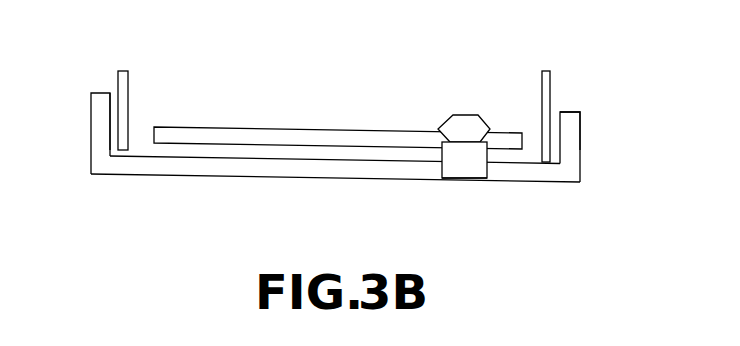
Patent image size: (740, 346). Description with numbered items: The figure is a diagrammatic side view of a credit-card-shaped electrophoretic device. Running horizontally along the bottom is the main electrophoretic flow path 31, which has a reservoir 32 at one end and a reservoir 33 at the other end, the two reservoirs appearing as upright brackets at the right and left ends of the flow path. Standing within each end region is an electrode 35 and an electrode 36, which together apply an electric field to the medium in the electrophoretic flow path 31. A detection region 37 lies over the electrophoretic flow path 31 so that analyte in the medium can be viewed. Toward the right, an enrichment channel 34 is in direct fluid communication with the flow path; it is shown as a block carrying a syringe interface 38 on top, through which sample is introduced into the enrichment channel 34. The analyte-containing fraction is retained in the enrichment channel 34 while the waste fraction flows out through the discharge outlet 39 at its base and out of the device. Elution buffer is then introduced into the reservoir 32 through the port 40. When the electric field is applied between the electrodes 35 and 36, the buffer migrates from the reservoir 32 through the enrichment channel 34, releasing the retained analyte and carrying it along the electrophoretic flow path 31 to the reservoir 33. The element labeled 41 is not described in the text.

The main electrophoretic flow path 31 is at (297, 166).
The reservoir 32 is at (535, 158).
The reservoir 33 is at (140, 150).
The enrichment channel 34 is at (462, 160).
The electrode 35 is at (548, 80).
The electrode 36 is at (118, 84).
The detection region 37 is at (200, 135).
The syringe interface 38 is at (465, 127).
The discharge outlet 39 is at (480, 182).
The port 40 is at (555, 127).
The left slot 41 is at (133, 115).